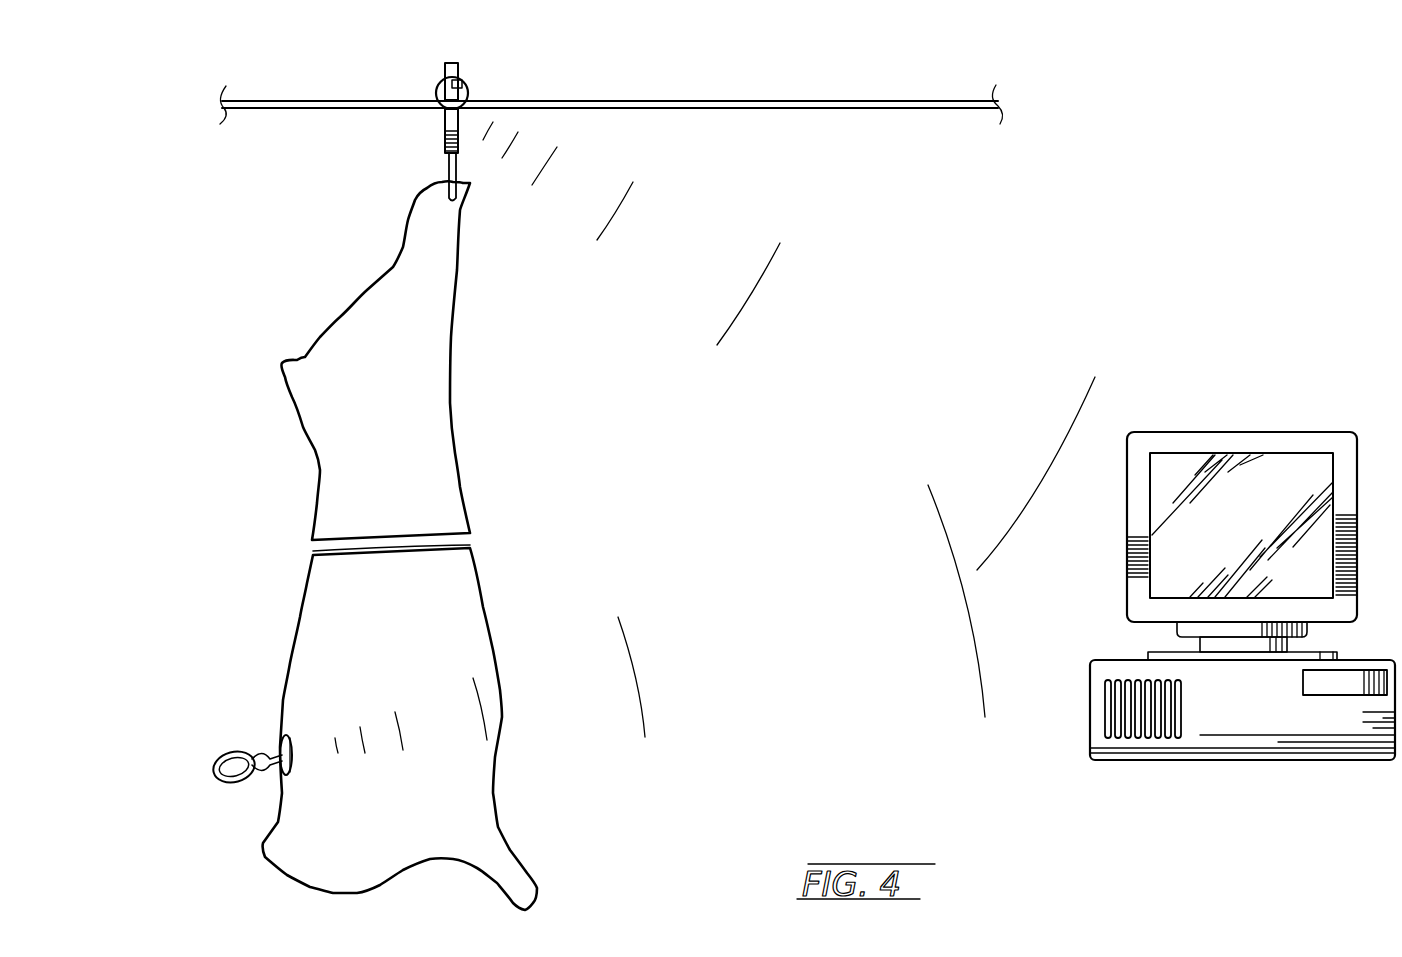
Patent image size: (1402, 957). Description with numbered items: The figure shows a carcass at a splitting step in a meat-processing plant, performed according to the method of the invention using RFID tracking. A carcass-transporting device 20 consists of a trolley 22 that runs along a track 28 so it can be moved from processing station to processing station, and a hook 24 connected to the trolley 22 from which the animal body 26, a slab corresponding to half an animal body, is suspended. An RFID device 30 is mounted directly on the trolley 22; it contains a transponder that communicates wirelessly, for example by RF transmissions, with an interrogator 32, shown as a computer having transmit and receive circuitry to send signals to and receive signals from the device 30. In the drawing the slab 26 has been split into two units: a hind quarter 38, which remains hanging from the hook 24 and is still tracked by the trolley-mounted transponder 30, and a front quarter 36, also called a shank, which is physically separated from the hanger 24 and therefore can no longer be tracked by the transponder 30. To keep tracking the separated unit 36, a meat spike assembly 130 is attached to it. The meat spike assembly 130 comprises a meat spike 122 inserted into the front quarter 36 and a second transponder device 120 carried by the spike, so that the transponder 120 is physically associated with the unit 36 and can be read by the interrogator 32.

The carcass-transporting device 20 is at (332, 56).
The trolley 22 is at (449, 122).
The hook 24 is at (447, 163).
The animal body 26 is at (137, 384).
The track 28 is at (820, 110).
The RFID device 30 is at (470, 85).
The interrogator 32 is at (1282, 356).
The front quarter 36 is at (432, 607).
The hind quarter 38 is at (430, 415).
The transponder device 120 is at (269, 767).
The meat spike 122 is at (272, 750).
The meat spike assembly 130 is at (218, 747).